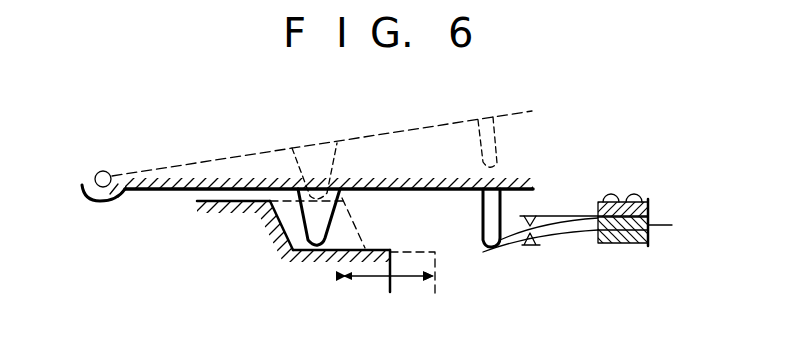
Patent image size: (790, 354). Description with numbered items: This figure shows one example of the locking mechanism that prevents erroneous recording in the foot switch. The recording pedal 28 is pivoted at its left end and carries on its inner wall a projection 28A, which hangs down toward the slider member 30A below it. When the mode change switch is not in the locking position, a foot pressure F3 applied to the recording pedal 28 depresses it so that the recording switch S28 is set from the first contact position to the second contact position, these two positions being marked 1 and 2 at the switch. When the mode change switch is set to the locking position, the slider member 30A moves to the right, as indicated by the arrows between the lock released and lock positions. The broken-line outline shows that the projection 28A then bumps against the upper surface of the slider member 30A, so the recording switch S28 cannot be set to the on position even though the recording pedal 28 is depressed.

The recording pedal 28 is at (431, 169).
The projection 28A is at (330, 232).
The slider member 30A is at (228, 205).
The foot pressure F3 is at (506, 214).
The recording switch S28 is at (627, 197).
The sensor first layer contact 1 is at (648, 215).
The sensor second layer contact 2 is at (648, 235).